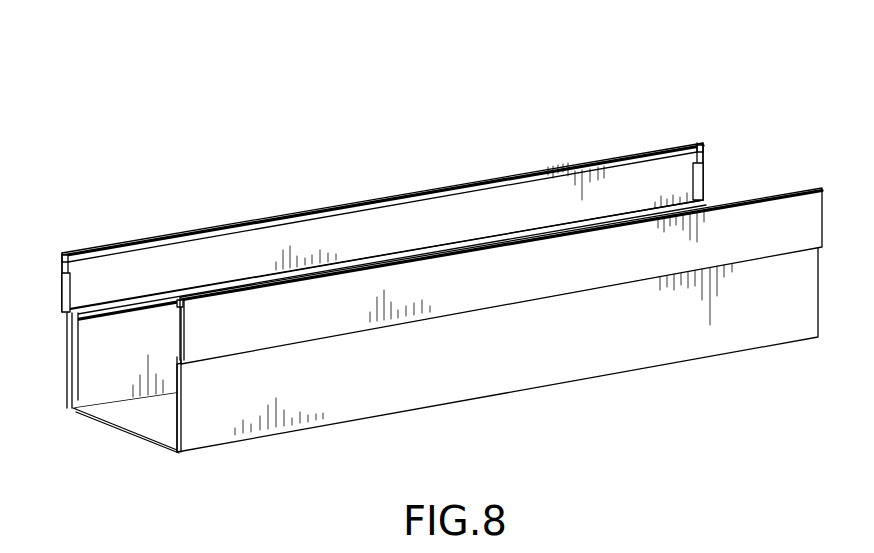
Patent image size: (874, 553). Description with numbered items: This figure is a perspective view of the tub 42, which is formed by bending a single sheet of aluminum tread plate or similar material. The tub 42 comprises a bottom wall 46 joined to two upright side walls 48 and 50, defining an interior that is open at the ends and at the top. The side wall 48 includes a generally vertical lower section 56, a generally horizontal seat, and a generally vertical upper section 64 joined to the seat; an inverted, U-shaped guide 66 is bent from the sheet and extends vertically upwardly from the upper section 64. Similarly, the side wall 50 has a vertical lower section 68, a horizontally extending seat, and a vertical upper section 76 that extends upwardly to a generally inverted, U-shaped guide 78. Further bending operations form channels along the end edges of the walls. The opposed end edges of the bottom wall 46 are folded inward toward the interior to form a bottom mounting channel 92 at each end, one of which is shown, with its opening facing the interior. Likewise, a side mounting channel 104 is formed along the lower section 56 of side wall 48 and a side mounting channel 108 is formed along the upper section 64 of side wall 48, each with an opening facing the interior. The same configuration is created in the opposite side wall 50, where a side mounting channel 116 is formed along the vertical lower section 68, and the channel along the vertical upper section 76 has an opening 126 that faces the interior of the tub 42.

The tub 42 is at (444, 251).
The bottom wall 46 is at (117, 437).
The side wall 48 is at (444, 280).
The side wall 50 is at (375, 185).
The lower section 56 is at (748, 332).
The upper section 64 is at (823, 216).
The guide 66 is at (181, 300).
The lower section 68 is at (103, 345).
The upper section 76 is at (385, 196).
The guide 78 is at (62, 253).
The bottom mounting channel 92 is at (143, 437).
The side mounting channel 104 is at (181, 418).
The side mounting channel 108 is at (187, 360).
The side mounting channel 116 is at (73, 380).
The opening 126 is at (72, 283).